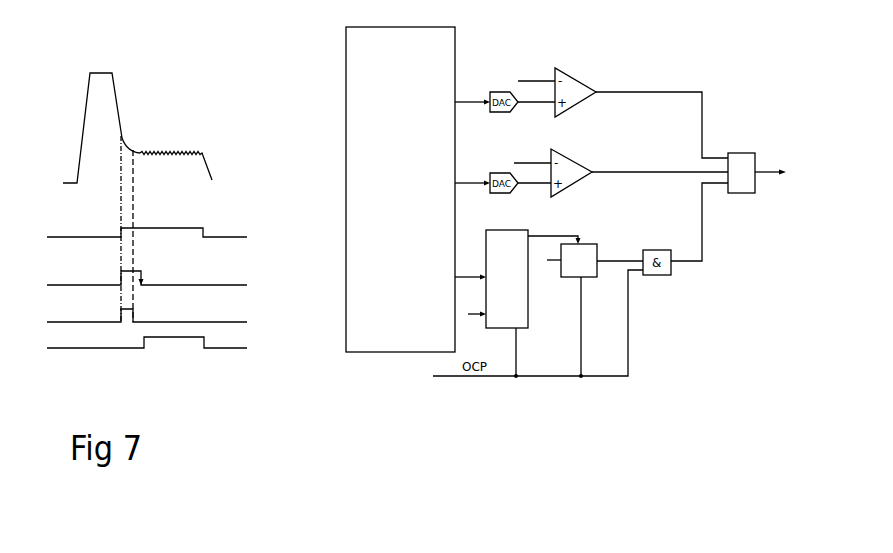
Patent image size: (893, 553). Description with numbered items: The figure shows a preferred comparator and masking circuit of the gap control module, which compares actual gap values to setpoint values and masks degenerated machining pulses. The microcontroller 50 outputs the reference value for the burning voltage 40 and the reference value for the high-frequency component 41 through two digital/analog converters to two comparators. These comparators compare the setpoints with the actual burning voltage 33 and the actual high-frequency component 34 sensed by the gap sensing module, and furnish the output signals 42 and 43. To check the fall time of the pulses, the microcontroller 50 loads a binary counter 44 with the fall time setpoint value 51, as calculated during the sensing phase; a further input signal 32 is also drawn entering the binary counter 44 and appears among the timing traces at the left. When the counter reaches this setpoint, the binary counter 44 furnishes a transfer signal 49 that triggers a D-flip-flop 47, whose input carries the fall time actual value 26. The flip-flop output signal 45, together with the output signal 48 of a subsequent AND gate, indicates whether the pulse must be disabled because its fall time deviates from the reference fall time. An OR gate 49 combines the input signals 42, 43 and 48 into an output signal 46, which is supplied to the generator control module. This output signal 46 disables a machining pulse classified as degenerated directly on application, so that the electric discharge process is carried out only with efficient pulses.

The fall time actual value 26 is at (291, 284).
The enable signal 32 is at (254, 272).
The burning voltage actual value 33 is at (536, 74).
The high-frequency component actual value 34 is at (532, 155).
The burning voltage reference value 40 is at (536, 95).
The high-frequency component reference value 41 is at (534, 176).
The comparator output signal 42 is at (662, 117).
The comparator output signal 43 is at (660, 164).
The binary counter 44 is at (507, 279).
The output signal of D-flip-flop 45 is at (332, 296).
The output signal of OR gate 46 is at (770, 166).
The D-flip-flop 47 is at (579, 260).
The output signal of AND gate 48 is at (699, 222).
The transfer signal / OR gate 49 is at (388, 212).
The microcontroller 50 is at (400, 189).
The fall time setpoint value 51 is at (470, 271).